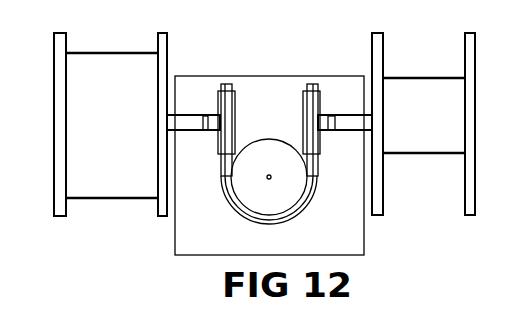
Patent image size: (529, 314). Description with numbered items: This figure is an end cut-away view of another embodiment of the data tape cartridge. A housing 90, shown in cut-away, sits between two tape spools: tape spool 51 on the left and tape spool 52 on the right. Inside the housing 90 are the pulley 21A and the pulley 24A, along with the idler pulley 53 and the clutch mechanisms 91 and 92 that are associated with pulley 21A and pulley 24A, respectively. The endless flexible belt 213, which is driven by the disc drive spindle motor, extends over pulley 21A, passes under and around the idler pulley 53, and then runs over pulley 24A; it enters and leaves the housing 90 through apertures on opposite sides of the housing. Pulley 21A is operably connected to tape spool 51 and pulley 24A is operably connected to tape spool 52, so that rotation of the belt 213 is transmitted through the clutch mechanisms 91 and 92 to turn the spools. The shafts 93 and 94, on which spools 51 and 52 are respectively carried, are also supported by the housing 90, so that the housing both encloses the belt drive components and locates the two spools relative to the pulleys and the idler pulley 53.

The tape spool 51 is at (60, 184).
The tape spool 52 is at (475, 193).
The housing 90 is at (364, 247).
The clutch mechanism 91 is at (206, 116).
The clutch mechanism 92 is at (332, 115).
The shaft 93 is at (172, 132).
The shaft 94 is at (365, 132).
The pulley 21A is at (235, 95).
The pulley 24A is at (305, 93).
The flexible belt 213 is at (223, 183).
The idler pulley 53 is at (280, 205).